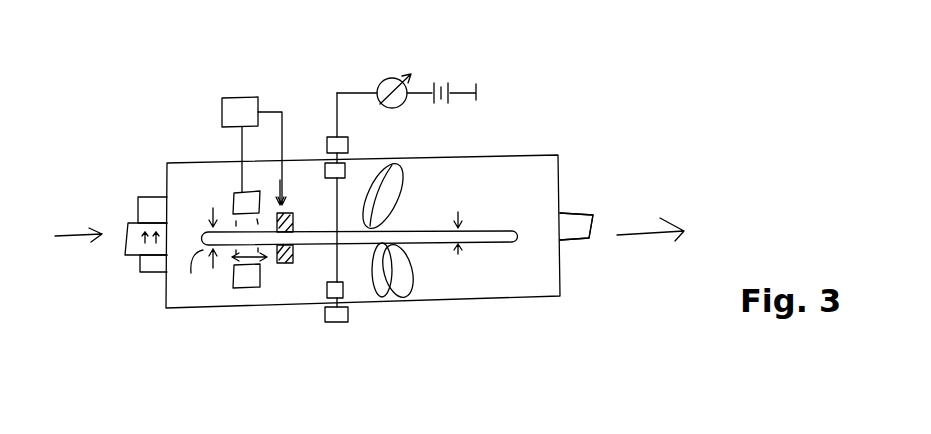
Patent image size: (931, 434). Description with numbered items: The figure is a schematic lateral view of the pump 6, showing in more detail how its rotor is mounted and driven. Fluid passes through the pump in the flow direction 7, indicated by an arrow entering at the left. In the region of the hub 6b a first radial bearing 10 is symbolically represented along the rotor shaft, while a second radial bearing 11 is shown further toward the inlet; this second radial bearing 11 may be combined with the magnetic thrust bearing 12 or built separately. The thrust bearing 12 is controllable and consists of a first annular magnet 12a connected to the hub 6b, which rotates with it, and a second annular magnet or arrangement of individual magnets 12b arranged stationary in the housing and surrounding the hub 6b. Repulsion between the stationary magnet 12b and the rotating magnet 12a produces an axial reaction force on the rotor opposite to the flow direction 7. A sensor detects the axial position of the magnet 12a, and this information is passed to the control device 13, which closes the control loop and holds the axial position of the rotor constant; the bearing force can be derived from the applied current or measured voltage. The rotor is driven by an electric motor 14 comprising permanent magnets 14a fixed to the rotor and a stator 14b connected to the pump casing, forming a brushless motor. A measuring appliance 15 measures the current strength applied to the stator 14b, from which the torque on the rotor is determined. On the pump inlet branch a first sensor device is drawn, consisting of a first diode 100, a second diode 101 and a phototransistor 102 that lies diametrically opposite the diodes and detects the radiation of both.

The pump 6 is at (487, 141).
The hub 6b is at (493, 227).
The flow direction 7 is at (76, 248).
The first radial bearing 10 is at (466, 247).
The second radial bearing 11 is at (197, 255).
The magnetic thrust bearing 12 is at (267, 281).
The first annular magnet 12a is at (289, 266).
The second annular magnet 12b is at (240, 290).
The control device 13 is at (215, 107).
The electric motor 14 is at (363, 236).
The permanent magnets 14a is at (323, 177).
The stator 14b is at (347, 325).
The measuring appliance 15 is at (381, 78).
The first diode 100 is at (140, 272).
The second diode 101 is at (157, 273).
The phototransistor 102 is at (152, 198).